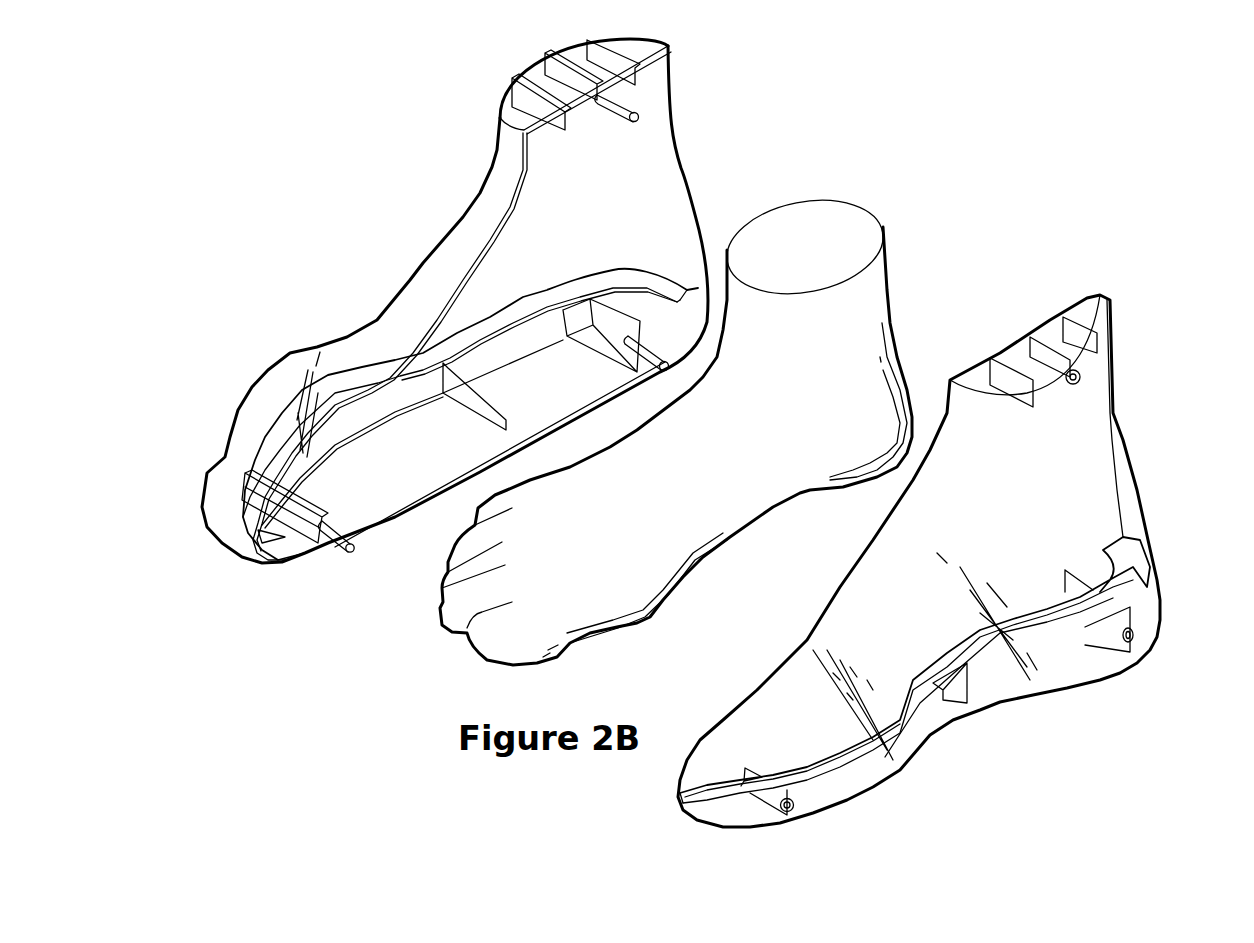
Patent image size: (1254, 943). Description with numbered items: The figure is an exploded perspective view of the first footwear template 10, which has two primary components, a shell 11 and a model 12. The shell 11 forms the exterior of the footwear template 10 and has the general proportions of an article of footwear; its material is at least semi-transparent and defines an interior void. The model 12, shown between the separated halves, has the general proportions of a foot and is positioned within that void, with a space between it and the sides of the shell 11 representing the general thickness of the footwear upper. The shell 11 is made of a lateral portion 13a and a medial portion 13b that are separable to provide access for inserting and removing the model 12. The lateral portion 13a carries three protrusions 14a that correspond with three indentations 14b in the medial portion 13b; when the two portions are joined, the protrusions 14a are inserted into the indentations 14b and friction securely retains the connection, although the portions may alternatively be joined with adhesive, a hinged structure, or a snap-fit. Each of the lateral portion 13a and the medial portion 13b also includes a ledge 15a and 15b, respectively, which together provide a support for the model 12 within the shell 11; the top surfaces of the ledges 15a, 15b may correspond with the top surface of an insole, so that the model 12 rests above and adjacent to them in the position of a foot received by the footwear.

The footwear template 10 is at (364, 198).
The shell 11 is at (290, 352).
The model 12 is at (887, 252).
The lateral portion 13a is at (381, 321).
The medial portion 13b is at (851, 607).
The protrusions 14a is at (615, 122).
The indentations 14b is at (1030, 348).
The ledge 15a is at (613, 273).
The ledge 15b is at (1132, 570).